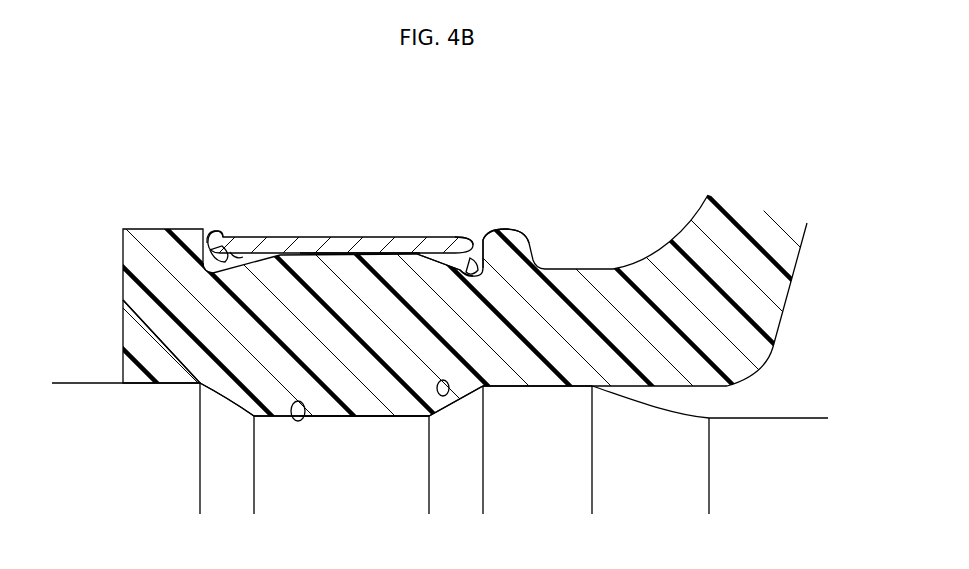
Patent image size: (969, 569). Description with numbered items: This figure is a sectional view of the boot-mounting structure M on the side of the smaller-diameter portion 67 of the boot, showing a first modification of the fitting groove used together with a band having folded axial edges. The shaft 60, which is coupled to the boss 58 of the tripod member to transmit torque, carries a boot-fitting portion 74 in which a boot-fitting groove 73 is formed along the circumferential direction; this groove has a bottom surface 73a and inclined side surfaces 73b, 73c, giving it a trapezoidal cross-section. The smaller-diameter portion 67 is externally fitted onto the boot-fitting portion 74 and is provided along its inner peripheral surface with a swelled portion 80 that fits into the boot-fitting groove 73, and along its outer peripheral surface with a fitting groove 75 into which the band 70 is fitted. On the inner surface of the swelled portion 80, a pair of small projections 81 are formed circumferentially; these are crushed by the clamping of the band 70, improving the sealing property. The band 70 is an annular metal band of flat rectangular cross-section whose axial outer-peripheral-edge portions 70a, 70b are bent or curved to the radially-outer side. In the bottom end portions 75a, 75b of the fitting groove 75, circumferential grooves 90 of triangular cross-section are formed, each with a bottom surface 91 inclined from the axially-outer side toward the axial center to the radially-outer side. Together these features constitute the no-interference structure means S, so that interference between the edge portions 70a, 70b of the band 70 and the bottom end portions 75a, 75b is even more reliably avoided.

The boss 58 is at (593, 259).
The shaft 60 is at (86, 378).
The smaller-diameter portion 67 is at (373, 276).
The band 70 is at (345, 230).
The axial outer-peripheral-edge portion 70a is at (465, 232).
The axial outer-peripheral-edge portion 70b is at (221, 238).
The boot-fitting groove 73 is at (409, 441).
The bottom surface 73a is at (392, 413).
The inclined side surface 73b is at (232, 416).
The inclined side surface 73c is at (470, 485).
The boot-fitting portion 74 is at (466, 443).
The fitting groove 75 is at (308, 250).
The bottom end portion 75a is at (483, 243).
The bottom end portion 75b is at (208, 261).
The swelled portion 80 is at (334, 406).
The small projection 81 is at (442, 381).
The circumferential groove 90 is at (474, 237).
The bottom surface 91 is at (470, 268).
The boot-mounting structure M is at (318, 226).
The no-interference structure means S is at (486, 267).